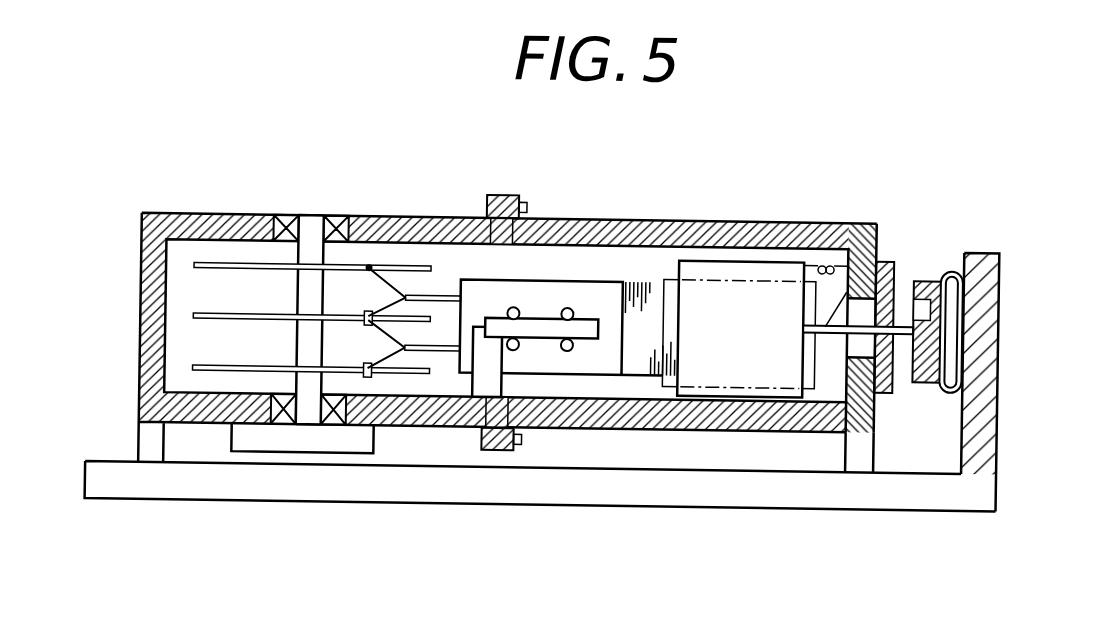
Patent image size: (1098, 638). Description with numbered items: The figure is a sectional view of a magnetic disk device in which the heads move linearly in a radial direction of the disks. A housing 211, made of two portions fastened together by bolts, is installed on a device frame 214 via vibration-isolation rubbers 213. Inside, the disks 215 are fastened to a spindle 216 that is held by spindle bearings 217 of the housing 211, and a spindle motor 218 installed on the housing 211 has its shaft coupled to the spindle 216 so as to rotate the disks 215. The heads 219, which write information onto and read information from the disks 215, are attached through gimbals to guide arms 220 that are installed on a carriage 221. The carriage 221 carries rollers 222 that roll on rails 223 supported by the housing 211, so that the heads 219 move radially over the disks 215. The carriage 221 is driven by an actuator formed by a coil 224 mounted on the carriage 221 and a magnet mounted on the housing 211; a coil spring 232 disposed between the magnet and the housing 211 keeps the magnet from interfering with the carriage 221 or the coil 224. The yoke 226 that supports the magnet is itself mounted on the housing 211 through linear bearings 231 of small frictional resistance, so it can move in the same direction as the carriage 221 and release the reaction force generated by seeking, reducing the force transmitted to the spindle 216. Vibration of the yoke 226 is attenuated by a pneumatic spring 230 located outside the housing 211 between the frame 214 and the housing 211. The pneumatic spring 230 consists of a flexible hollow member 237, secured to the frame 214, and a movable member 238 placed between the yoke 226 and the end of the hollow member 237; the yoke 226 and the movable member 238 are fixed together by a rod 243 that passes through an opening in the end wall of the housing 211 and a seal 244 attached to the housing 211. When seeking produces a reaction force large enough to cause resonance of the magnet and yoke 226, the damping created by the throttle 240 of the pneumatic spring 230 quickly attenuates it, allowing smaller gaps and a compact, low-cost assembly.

The housing 211 is at (137, 314).
The vibration-isolation rubbers 213 is at (863, 441).
The device frame 214 is at (987, 416).
The disks 215 is at (208, 268).
The spindle 216 is at (313, 225).
The spindle bearings 217 is at (283, 224).
The spindle motor 218 is at (297, 447).
The heads 219 is at (368, 268).
The guide arms 220 is at (443, 297).
The carriage 221 is at (550, 292).
The rollers 222 is at (518, 351).
The rails 223 is at (490, 332).
The coil 224 is at (640, 281).
The yoke 226 is at (690, 395).
The pneumatic spring 230 is at (948, 262).
The linear bearings 231 is at (772, 392).
The coil spring 232 is at (822, 262).
The flexible hollow member 237 is at (947, 386).
The movable member 238 is at (968, 344).
The throttle 240 is at (970, 302).
The rod 243 is at (890, 250).
The seal 244 is at (895, 272).